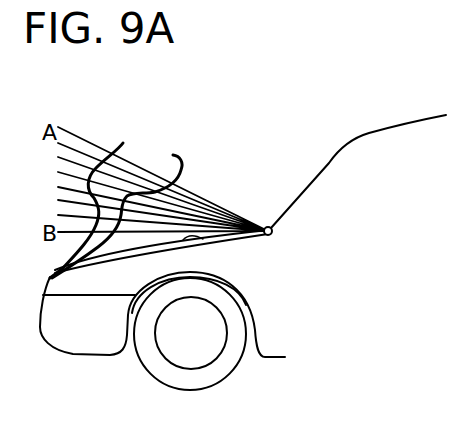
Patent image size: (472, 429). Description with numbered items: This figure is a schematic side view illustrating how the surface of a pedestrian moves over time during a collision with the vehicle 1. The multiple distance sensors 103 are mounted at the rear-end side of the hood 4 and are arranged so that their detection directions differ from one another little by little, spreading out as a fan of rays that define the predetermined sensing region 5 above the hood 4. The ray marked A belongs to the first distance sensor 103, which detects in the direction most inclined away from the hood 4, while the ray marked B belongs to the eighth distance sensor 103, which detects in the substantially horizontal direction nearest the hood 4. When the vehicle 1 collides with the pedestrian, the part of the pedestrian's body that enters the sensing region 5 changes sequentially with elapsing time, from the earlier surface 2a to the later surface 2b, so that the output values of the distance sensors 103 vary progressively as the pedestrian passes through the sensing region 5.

The vehicle 1 is at (329, 163).
The surface of the pedestrian (initial) 2a is at (90, 224).
The surface of the pedestrian (later) 2b is at (180, 156).
The hood 4 is at (212, 239).
The sensing region 5 is at (75, 172).
The distance sensor 103 is at (267, 227).